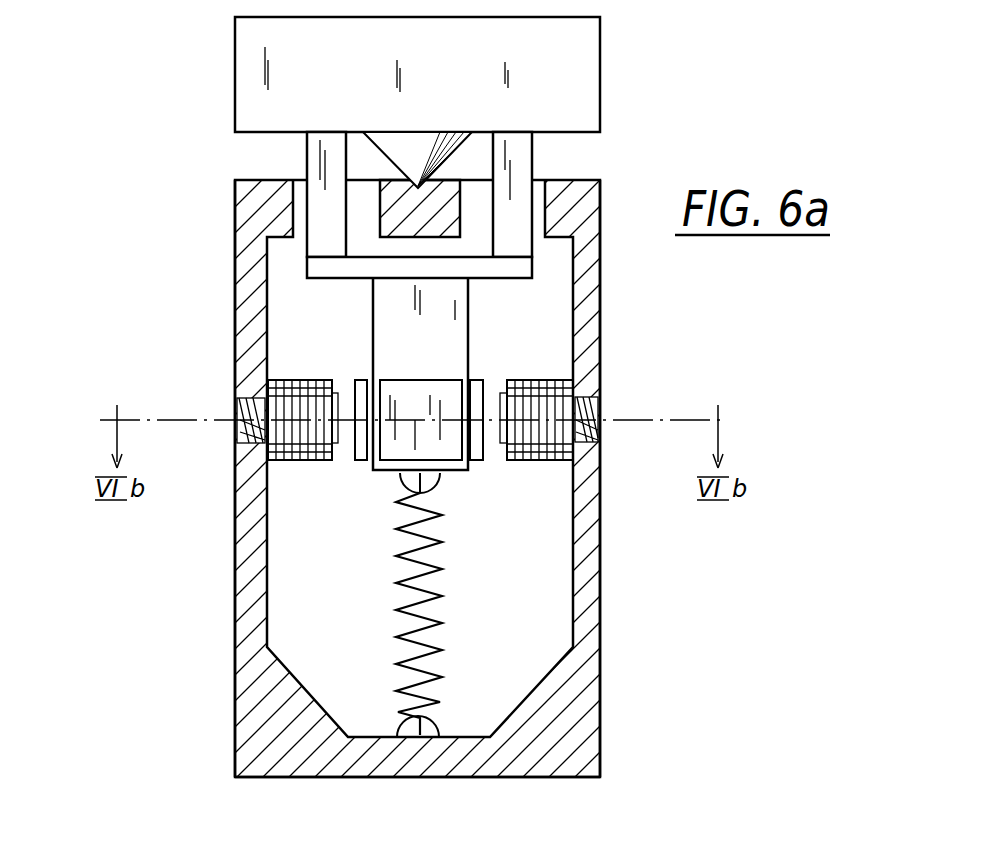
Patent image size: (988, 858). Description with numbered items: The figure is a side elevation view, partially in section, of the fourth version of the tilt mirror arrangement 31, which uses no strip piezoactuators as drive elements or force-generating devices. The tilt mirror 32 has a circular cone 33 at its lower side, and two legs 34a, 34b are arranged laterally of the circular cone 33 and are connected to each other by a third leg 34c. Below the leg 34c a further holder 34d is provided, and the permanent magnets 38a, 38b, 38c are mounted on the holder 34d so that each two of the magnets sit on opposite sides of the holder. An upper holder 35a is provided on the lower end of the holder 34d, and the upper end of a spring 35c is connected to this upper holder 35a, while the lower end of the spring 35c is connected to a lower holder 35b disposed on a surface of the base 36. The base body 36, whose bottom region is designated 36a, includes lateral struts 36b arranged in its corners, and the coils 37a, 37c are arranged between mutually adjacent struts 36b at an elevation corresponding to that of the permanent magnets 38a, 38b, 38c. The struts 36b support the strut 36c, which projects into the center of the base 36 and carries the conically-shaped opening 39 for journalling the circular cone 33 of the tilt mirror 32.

The tilt mirror arrangement 31 is at (449, 95).
The tilt mirror 32 is at (585, 88).
The circular cone 33 is at (395, 146).
The conically-shaped opening 39 is at (433, 178).
The leg 34a is at (520, 243).
The leg 34b is at (310, 252).
The third leg 34c is at (345, 267).
The holder 34d is at (444, 359).
The upper holder 35a is at (437, 477).
The lower holder 35b is at (438, 735).
The spring 35c is at (430, 647).
The base body 36 is at (434, 506).
The housing bottom wall 36a is at (440, 777).
The lateral strut 36b is at (237, 350).
The strut 36c is at (443, 220).
The coil 37a is at (553, 460).
The coil 37c is at (293, 462).
The permanent magnet 38a is at (480, 457).
The permanent magnet 38b is at (400, 443).
The permanent magnet 38c is at (363, 455).